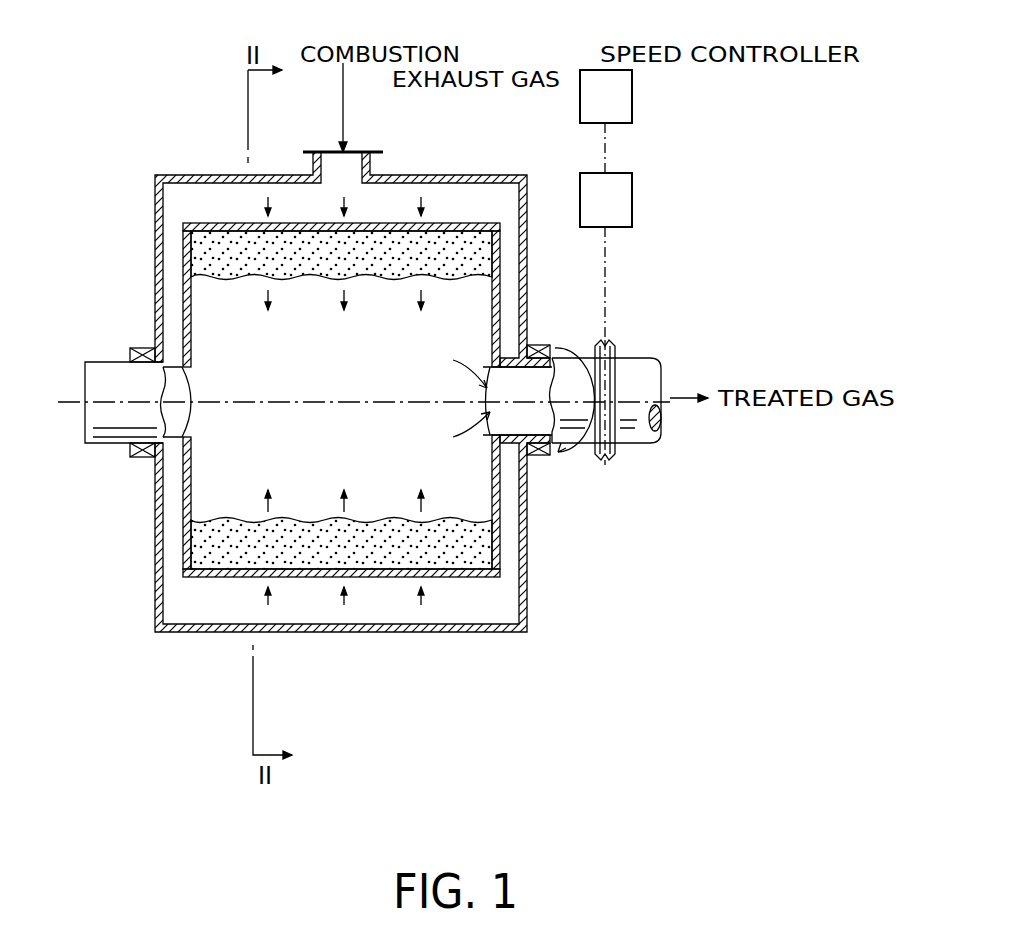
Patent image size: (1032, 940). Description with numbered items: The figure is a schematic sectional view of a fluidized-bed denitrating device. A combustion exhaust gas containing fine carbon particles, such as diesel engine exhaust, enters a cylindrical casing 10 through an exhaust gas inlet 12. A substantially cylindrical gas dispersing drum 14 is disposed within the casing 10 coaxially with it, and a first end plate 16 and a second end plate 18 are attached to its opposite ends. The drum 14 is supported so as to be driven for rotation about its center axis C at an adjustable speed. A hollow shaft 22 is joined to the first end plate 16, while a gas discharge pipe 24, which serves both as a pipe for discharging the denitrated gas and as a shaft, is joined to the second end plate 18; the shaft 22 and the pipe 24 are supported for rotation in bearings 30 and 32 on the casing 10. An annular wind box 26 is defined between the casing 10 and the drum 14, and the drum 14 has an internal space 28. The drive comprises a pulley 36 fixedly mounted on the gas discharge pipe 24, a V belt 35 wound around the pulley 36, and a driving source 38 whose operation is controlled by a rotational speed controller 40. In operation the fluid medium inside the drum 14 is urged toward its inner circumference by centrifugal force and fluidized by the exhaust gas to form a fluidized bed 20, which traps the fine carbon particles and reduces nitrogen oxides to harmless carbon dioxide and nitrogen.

The cylindrical casing 10 is at (450, 175).
The exhaust gas inlet 12 is at (380, 156).
The gas dispersing drum 14 is at (458, 223).
The first end plate 16 is at (182, 486).
The second end plate 18 is at (503, 498).
The fluidized bed 20 is at (303, 248).
The hollow shaft 22 is at (110, 430).
The gas discharge pipe 24 is at (590, 443).
The annular wind box 26 is at (295, 610).
The internal space 28 is at (432, 467).
The bearing 30 is at (142, 347).
The bearing 32 is at (538, 345).
The V belt 35 is at (605, 252).
The pulley 36 is at (615, 342).
The driving source 38 is at (632, 192).
The rotational speed controller 40 is at (632, 95).
The center axis C is at (332, 400).